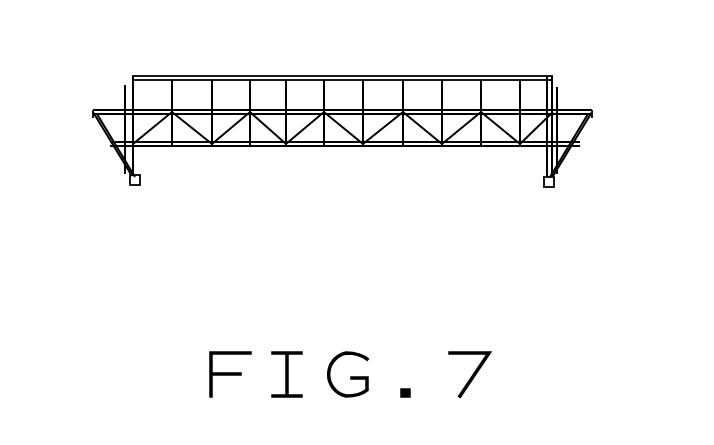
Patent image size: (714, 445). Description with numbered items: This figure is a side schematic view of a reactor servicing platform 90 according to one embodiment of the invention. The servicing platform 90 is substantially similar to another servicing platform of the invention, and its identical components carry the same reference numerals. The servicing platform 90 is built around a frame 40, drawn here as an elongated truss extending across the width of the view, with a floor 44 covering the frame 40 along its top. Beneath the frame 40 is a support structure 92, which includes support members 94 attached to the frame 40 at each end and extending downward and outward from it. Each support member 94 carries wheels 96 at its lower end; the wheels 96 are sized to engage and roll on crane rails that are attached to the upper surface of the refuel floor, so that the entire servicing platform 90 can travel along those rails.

The reactor servicing platform 90 is at (344, 127).
The floor 44 is at (303, 108).
The frame 40 is at (390, 156).
The support structure 92 is at (157, 177).
The support member 94 is at (130, 171).
The wheels 96 is at (136, 185).